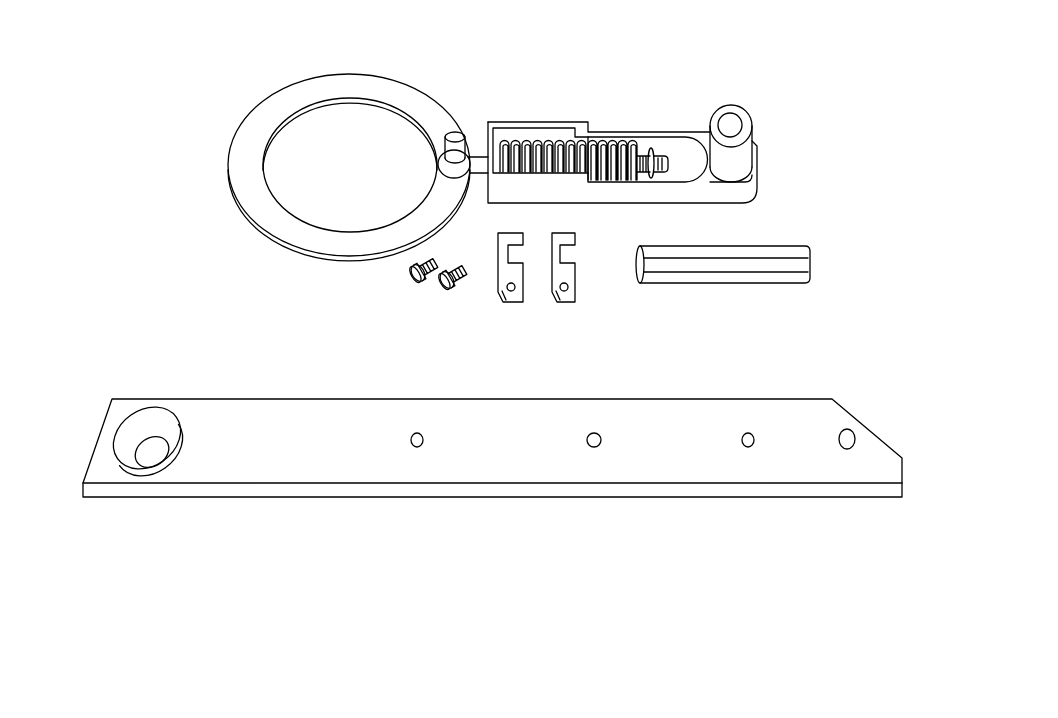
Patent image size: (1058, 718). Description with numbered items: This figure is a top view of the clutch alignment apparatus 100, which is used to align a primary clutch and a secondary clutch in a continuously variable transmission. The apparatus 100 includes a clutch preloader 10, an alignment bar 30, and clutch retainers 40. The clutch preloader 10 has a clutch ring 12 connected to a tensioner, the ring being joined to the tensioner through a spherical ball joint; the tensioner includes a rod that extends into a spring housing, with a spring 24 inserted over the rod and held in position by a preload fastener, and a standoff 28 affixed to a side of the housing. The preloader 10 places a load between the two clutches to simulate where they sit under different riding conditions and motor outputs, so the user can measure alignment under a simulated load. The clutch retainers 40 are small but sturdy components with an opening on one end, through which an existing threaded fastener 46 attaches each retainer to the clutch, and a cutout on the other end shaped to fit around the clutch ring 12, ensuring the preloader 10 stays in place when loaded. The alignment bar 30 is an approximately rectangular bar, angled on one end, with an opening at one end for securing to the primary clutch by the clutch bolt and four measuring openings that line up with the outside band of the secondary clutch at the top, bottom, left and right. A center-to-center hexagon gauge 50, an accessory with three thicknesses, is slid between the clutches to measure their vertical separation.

The clutch alignment apparatus 100 is at (135, 525).
The clutch preloader 10 is at (483, 102).
The clutch ring 12 is at (307, 90).
The spring 24 is at (573, 125).
The standoff 28 is at (730, 113).
The center-to-center hexagon gauge 50 is at (770, 252).
The threaded fastener 46 is at (403, 284).
The clutch retainer 40 is at (510, 302).
The alignment bar 30 is at (360, 420).